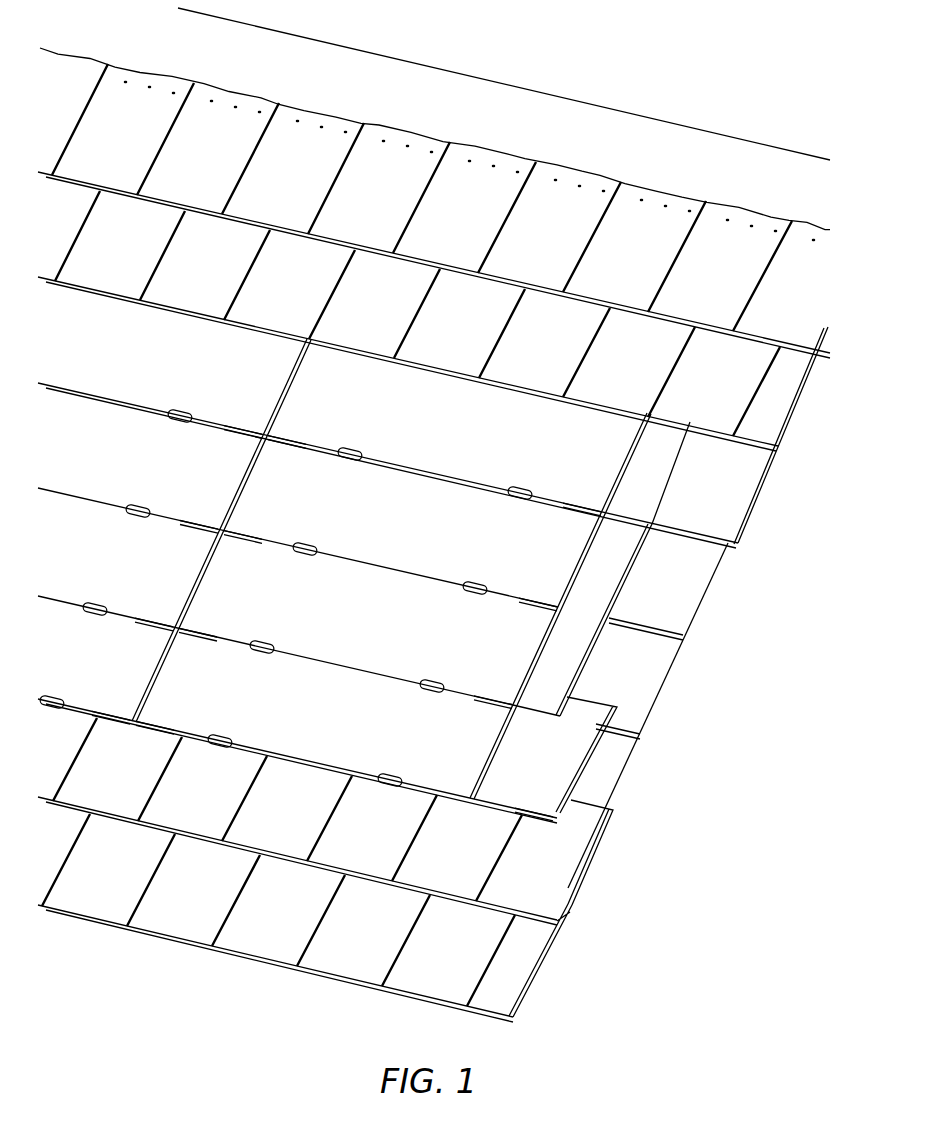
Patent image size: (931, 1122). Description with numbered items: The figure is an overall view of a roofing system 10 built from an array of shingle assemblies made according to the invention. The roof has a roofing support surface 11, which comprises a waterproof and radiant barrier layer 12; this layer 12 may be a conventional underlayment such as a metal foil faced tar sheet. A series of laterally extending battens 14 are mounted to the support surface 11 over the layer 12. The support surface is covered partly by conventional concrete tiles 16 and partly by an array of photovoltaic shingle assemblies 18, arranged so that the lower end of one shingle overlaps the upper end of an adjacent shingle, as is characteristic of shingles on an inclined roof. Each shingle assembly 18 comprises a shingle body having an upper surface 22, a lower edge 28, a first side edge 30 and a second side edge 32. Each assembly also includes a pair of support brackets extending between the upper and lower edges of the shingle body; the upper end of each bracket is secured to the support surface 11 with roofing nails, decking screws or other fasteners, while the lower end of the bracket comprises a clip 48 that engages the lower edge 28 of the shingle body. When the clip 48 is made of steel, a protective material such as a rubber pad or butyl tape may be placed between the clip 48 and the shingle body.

The roofing system 10 is at (659, 189).
The roofing support surface 11 is at (653, 715).
The waterproof and radiant barrier layer 12 is at (647, 682).
The battens 14 is at (683, 633).
The concrete tiles 16 is at (570, 767).
The photovoltaic shingle assemblies 18 is at (630, 478).
The upper surface 22 is at (554, 458).
The lower edge 28 is at (417, 470).
The first side edge 30 is at (295, 383).
The second side edge 32 is at (296, 379).
The clip 48 is at (351, 451).